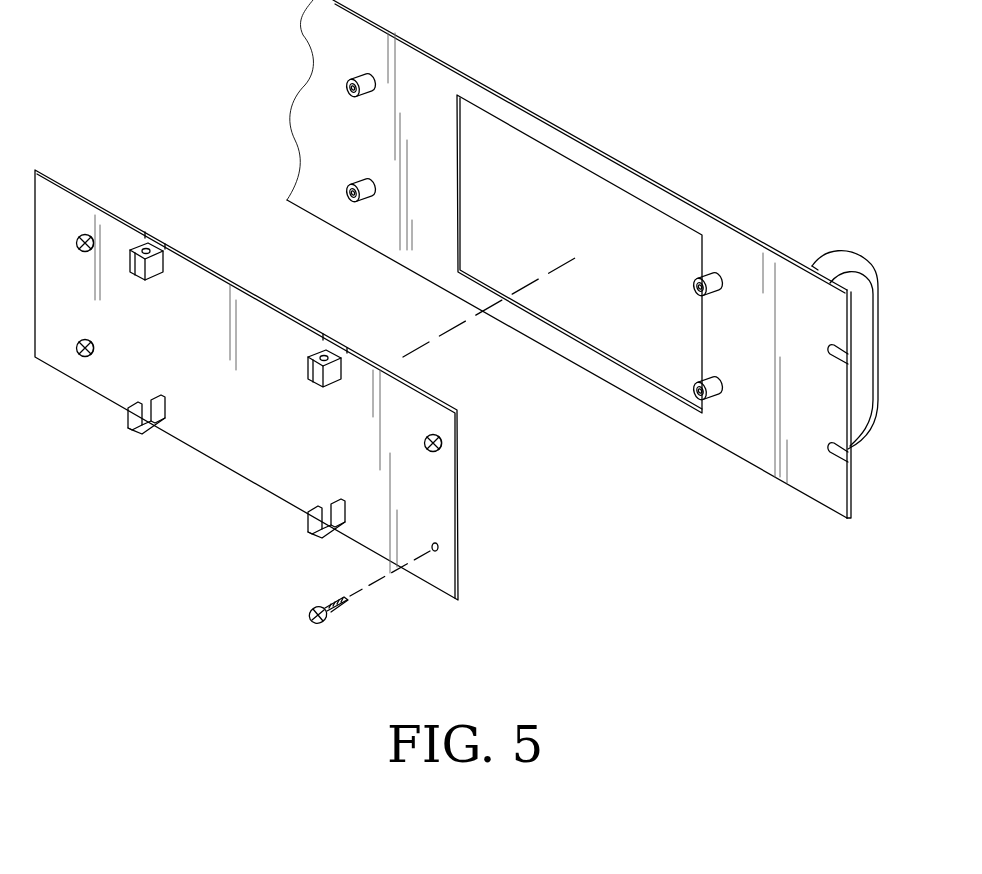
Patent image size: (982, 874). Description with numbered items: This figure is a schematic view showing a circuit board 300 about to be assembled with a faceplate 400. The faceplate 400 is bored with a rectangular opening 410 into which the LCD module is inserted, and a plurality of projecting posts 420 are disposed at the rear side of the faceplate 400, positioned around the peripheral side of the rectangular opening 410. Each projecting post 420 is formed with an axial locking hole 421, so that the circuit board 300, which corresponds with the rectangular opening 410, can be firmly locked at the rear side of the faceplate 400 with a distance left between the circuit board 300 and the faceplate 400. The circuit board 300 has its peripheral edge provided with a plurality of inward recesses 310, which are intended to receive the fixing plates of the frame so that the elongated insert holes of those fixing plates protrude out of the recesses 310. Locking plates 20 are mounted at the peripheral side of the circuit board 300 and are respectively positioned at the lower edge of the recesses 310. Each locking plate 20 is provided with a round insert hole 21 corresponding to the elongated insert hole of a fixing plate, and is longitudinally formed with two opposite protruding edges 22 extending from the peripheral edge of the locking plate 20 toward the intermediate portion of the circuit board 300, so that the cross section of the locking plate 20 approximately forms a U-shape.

The locking plate 20 is at (191, 201).
The round insert hole 21 is at (148, 248).
The protruding edge 22 is at (156, 263).
The circuit board 300 is at (246, 373).
The inward recess 310 is at (165, 246).
The faceplate 400 is at (582, 268).
The rectangular opening 410 is at (647, 363).
The projecting post 420 is at (713, 394).
The axial locking hole 421 is at (700, 393).